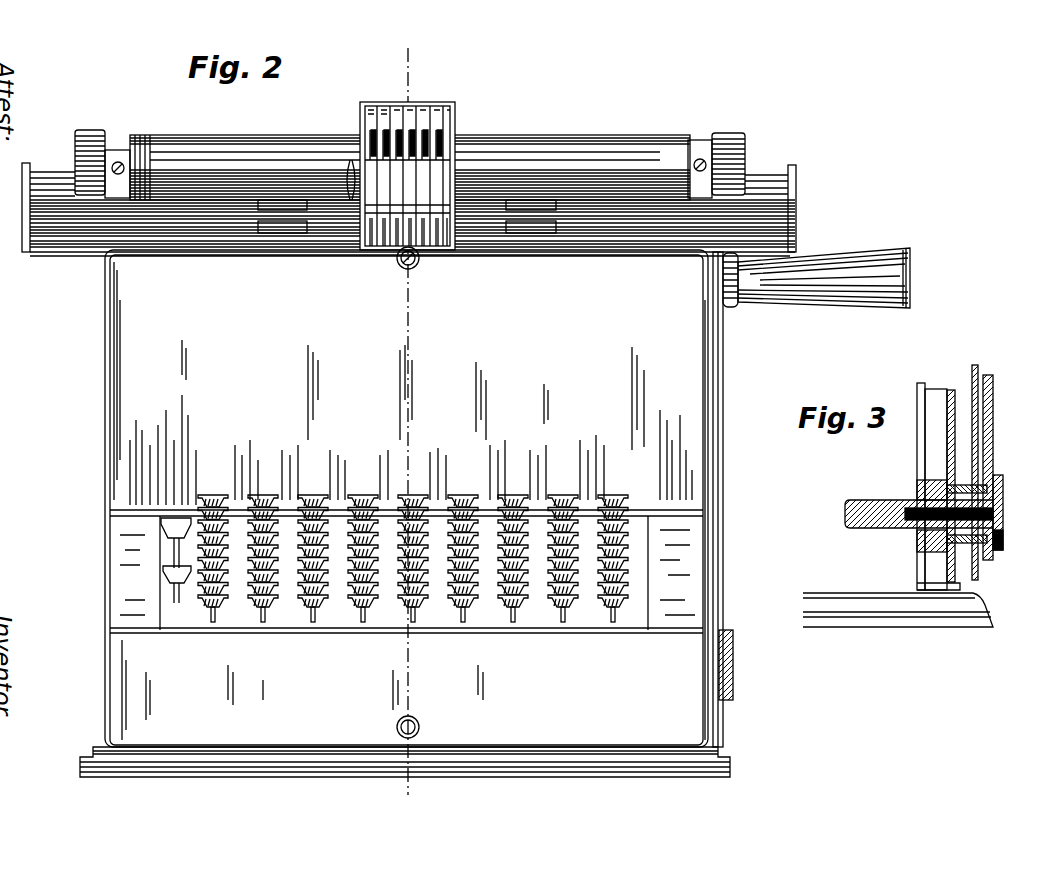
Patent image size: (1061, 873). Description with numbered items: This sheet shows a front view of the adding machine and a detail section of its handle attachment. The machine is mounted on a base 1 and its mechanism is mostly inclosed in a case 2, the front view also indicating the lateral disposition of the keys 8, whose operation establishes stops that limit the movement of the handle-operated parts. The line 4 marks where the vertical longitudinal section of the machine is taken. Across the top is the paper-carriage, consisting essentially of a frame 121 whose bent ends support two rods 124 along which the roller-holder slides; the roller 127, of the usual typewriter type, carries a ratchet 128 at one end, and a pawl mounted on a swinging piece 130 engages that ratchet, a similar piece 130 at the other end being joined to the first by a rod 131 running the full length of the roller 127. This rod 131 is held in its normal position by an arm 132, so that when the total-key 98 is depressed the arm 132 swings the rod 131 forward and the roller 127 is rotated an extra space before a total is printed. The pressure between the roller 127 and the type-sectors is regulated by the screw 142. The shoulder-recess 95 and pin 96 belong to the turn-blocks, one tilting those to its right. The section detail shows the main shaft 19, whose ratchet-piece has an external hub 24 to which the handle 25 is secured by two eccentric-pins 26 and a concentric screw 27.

In FIG. 2, the base 1 is at (590, 773).
In FIG. 2, the case 2 is at (406, 498).
In FIG. 2, the section line 4 4 is at (403, 421).
In FIG. 2, the keys 8 is at (608, 492).
In FIG. 3, the main shaft 19 is at (850, 530).
In FIG. 3, the external hub 24 is at (957, 550).
In FIG. 2, the handle 25 is at (723, 494).
In FIG. 3, the handle 25 is at (993, 443).
In FIG. 3, the eccentric-pins 26 is at (1003, 483).
In FIG. 2, the concentric screw 27 is at (734, 666).
In FIG. 3, the concentric screw 27 is at (1003, 515).
In FIG. 2, the shoulder-recess 95 is at (437, 140).
In FIG. 2, the pin 96 is at (392, 150).
In FIG. 2, the total-key 98 is at (175, 578).
In FIG. 2, the frame 121 is at (64, 248).
In FIG. 2, the rods 124 is at (750, 214).
In FIG. 2, the roller 127 is at (604, 146).
In FIG. 2, the ratchet 128 is at (690, 150).
In FIG. 2, the swinging piece 130 is at (116, 142).
In FIG. 2, the rod 131 is at (640, 226).
In FIG. 2, the arm 132 is at (412, 228).
In FIG. 2, the screw 142 is at (170, 527).